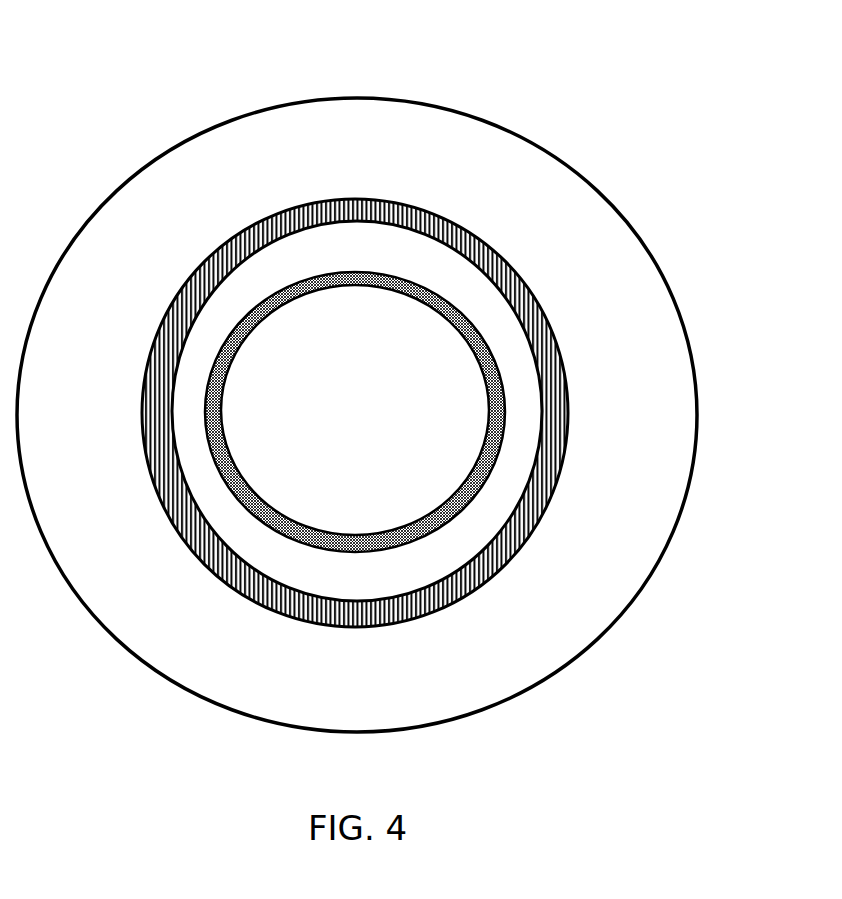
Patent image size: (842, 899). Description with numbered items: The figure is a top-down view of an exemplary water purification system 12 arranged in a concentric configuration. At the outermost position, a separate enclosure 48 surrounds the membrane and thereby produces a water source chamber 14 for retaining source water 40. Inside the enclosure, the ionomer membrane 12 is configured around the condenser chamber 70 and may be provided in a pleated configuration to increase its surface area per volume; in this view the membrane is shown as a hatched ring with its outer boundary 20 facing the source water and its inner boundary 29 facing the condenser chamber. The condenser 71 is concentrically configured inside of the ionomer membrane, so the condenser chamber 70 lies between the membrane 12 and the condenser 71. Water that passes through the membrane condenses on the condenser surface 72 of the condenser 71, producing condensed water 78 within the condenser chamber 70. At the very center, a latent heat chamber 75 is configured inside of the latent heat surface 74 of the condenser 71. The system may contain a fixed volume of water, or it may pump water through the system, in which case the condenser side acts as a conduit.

The ionomer membrane 12 is at (238, 110).
The separate enclosure 48 is at (613, 203).
The source water 40 is at (322, 150).
The water source chamber 14 is at (394, 190).
The outer surface of shield layer 20 is at (541, 303).
The inner surface of shield layer 29 is at (518, 330).
The condensed water 78 is at (392, 261).
The condenser chamber 70 is at (272, 291).
The condenser 71 is at (229, 333).
The condenser surface 72 is at (203, 372).
The latent heat surface 74 is at (222, 380).
The latent heat chamber 75 is at (364, 425).